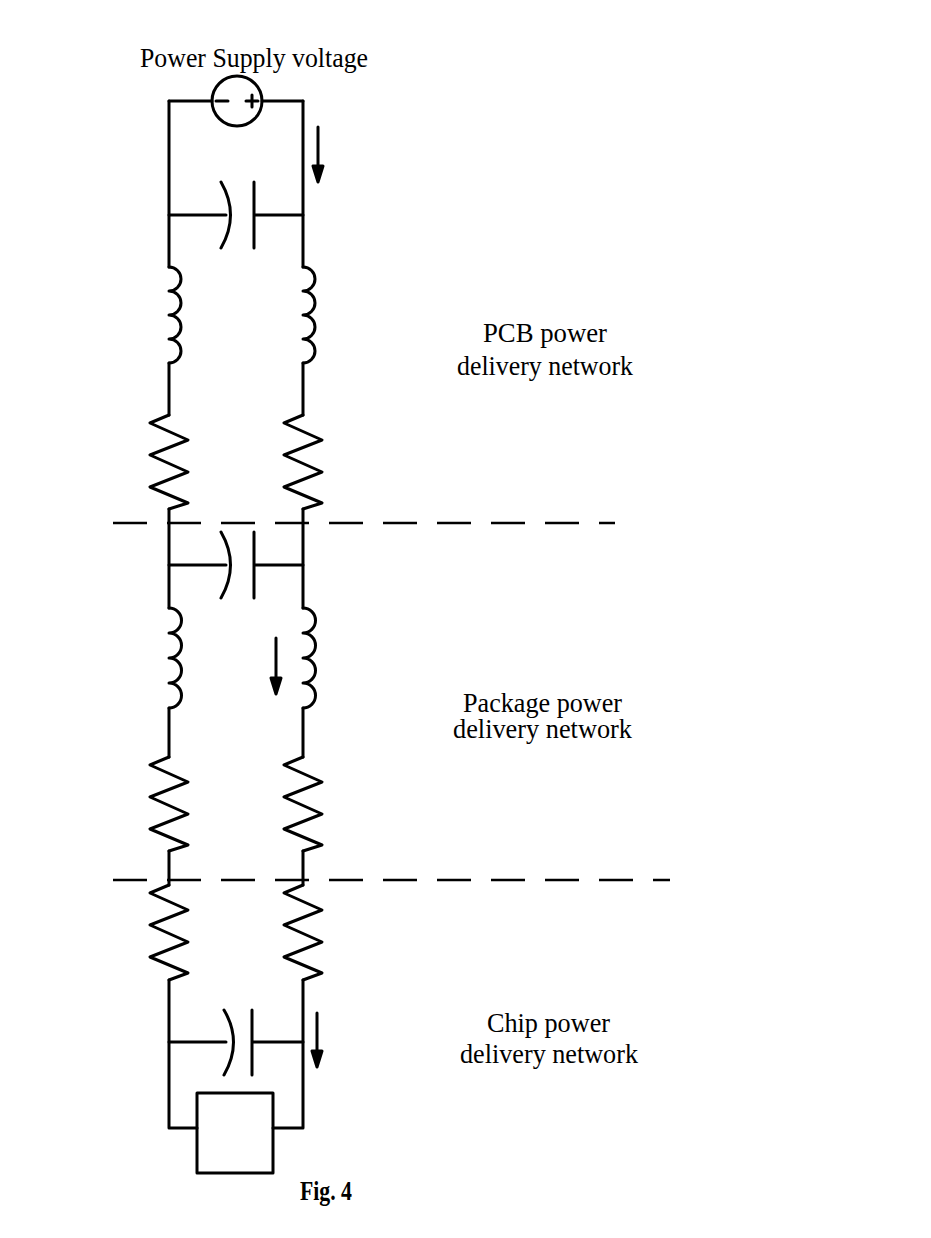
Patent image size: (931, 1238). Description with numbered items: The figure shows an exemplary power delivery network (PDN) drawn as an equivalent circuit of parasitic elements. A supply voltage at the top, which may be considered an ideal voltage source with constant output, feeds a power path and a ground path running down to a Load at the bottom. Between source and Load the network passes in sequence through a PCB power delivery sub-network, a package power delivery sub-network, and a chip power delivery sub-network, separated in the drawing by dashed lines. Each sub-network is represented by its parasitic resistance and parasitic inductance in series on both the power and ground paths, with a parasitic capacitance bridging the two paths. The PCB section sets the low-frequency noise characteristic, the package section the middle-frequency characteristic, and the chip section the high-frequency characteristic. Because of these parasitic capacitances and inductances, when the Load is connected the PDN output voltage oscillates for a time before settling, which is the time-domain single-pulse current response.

The load Load is at (235, 1133).